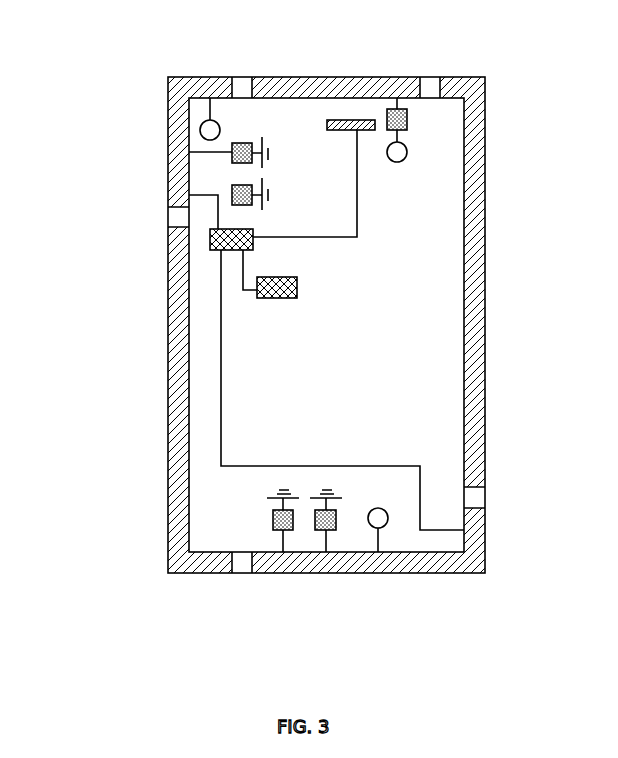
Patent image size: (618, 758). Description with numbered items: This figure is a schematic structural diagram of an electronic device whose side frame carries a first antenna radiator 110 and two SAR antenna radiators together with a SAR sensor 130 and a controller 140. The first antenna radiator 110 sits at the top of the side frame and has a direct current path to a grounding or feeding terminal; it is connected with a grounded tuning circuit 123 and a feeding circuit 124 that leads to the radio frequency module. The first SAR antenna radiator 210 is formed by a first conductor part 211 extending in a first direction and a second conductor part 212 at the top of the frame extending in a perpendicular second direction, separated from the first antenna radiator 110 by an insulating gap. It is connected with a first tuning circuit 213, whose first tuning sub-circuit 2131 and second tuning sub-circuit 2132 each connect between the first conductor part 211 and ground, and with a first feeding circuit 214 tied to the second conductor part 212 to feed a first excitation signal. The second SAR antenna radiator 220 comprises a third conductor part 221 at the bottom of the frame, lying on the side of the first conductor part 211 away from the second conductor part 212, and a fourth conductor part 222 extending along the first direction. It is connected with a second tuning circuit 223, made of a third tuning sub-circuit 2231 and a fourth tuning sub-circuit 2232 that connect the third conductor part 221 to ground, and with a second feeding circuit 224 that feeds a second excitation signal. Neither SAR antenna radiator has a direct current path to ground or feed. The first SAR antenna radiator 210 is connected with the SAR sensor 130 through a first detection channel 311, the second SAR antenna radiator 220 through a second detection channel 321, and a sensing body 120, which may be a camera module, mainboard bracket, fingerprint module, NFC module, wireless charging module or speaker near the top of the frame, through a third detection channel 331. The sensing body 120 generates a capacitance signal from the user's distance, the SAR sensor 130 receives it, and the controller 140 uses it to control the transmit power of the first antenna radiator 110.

The first antenna radiator 110 is at (300, 93).
The sensing body 120 is at (347, 125).
The tuning circuit 123 is at (387, 118).
The feeding circuit 124 is at (404, 150).
The SAR sensor 130 is at (220, 242).
The controller 140 is at (257, 296).
The first SAR antenna radiator 210 is at (148, 37).
The first conductor part 211 is at (178, 110).
The second conductor part 212 is at (208, 86).
The first tuning circuit 213 is at (80, 180).
The first tuning sub-circuit 2131 is at (235, 204).
The second tuning sub-circuit 2132 is at (200, 152).
The first feeding circuit 214 is at (215, 134).
The second SAR antenna radiator 220 is at (537, 578).
The third conductor part 221 is at (453, 563).
The fourth conductor part 222 is at (485, 552).
The second tuning circuit 223 is at (252, 630).
The third tuning sub-circuit 2231 is at (283, 520).
The fourth tuning sub-circuit 2232 is at (326, 520).
The second feeding circuit 224 is at (383, 523).
The first detection channel 311 is at (216, 212).
The second detection channel 321 is at (221, 353).
The third detection channel 331 is at (358, 223).